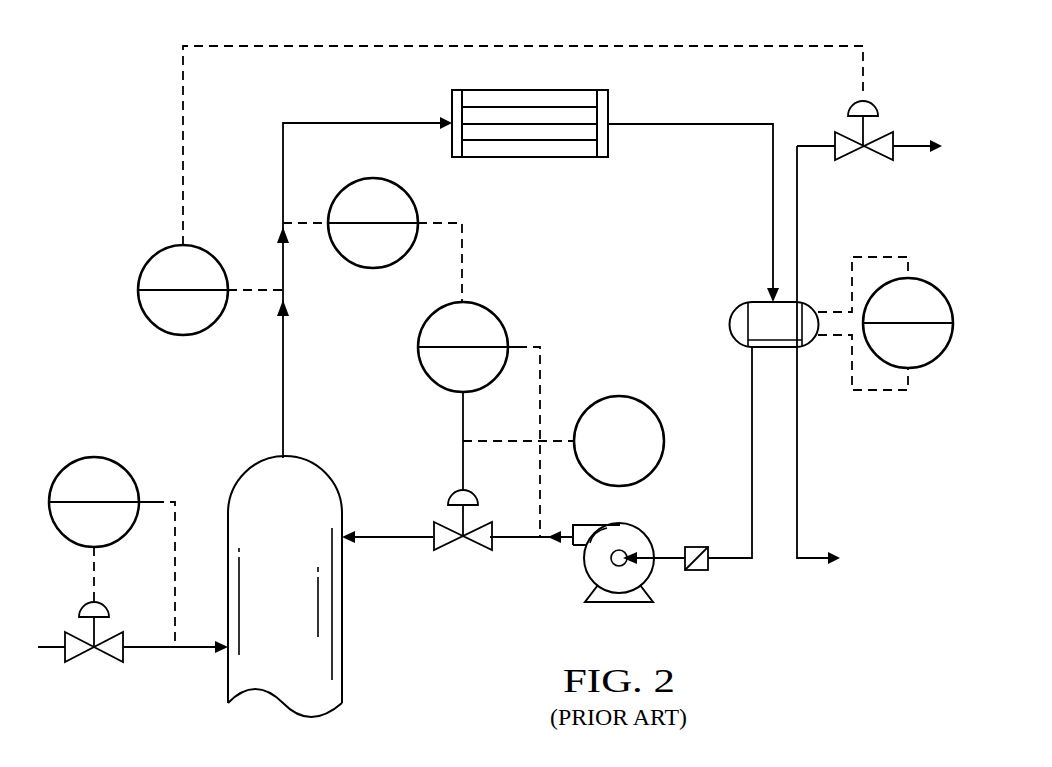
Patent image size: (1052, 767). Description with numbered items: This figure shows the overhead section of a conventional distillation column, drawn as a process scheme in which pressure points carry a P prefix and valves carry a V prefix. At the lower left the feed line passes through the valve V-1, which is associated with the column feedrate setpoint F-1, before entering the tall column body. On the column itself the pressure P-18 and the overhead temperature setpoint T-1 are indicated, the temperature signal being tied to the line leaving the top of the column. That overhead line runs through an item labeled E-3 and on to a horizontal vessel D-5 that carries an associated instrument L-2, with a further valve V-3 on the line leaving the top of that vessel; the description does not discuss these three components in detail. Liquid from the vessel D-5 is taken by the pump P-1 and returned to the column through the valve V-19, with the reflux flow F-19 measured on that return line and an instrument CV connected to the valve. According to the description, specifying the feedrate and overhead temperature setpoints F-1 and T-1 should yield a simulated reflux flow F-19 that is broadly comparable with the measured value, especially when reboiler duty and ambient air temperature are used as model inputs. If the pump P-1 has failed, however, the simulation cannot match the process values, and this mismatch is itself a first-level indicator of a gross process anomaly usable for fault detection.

The heat exchanger E-3 is at (530, 138).
The valve V-3 is at (864, 143).
The pressure P-18 is at (183, 290).
The overhead temperature setpoint T-1 is at (373, 223).
The reflux flow F-19 is at (468, 347).
The control variable controller CV is at (619, 441).
The drum / separator vessel D-5 is at (753, 324).
The level instrument L-2 is at (908, 323).
The valve V-19 is at (463, 533).
The pump P-1 is at (613, 576).
The column feedrate setpoint F-1 is at (102, 502).
The valve V-1 is at (94, 644).